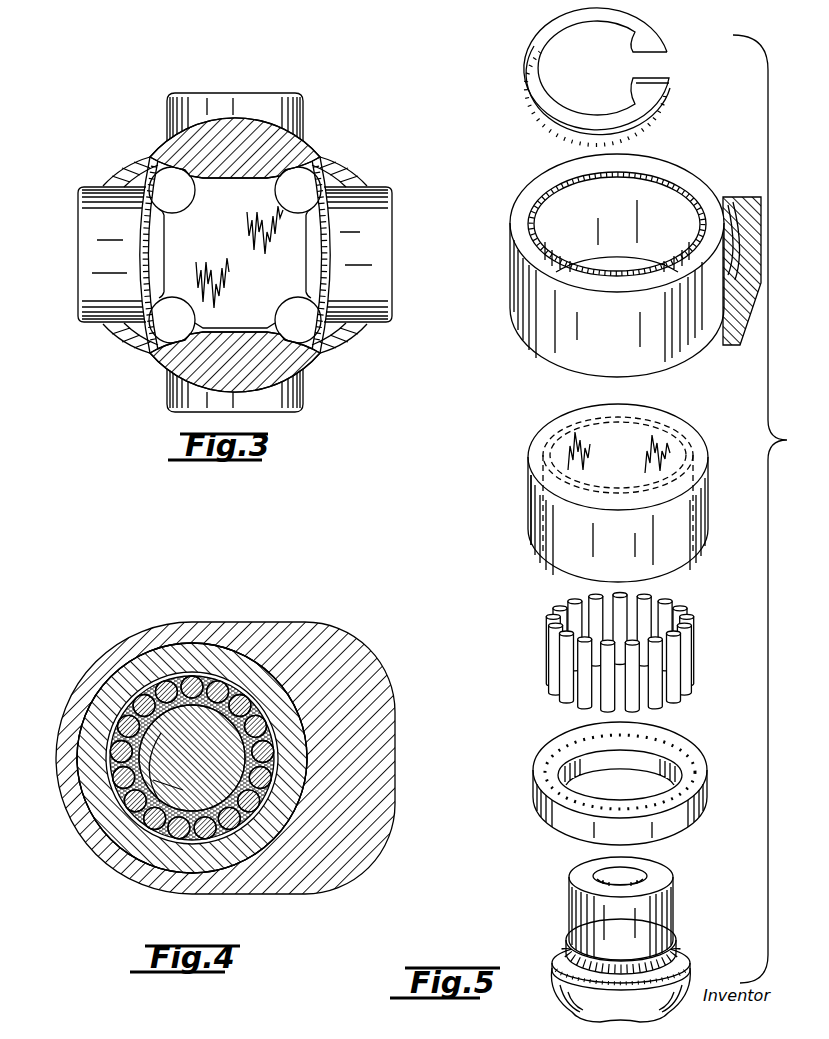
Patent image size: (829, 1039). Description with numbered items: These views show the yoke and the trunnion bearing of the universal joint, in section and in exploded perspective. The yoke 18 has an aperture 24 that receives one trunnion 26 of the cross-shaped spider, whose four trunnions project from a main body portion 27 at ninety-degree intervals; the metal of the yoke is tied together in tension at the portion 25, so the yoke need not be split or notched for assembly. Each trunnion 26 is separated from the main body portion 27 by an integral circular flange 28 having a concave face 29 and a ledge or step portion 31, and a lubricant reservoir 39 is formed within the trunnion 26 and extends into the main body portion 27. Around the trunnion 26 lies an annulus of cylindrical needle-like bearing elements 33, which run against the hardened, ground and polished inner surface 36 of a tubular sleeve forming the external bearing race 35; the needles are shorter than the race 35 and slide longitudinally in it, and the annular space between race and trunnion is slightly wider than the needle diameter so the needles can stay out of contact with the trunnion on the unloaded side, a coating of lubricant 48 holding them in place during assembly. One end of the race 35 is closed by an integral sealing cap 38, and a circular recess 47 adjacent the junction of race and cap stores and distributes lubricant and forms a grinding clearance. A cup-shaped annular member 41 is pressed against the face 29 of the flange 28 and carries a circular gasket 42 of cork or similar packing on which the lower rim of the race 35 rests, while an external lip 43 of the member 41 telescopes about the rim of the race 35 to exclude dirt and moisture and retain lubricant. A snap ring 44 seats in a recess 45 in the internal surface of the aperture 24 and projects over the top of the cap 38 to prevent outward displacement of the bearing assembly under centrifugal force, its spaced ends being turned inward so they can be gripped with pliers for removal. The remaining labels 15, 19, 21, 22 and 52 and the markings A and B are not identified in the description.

In FIG. 3, the cross body 15 is at (233, 228).
In FIG. 5, the cross body 15 is at (682, 993).
In FIG. 3, the yoke 18 is at (285, 167).
In FIG. 4, the yoke 18 is at (293, 635).
In FIG. 5, the yoke 18 is at (525, 203).
In FIG. 3, the bearing cap 19 is at (165, 358).
In FIG. 3, the trunnion 21 is at (380, 235).
In FIG. 3, the trunnion 22 is at (93, 217).
In FIG. 4, the aperture 24 is at (220, 655).
In FIG. 5, the aperture 24 is at (560, 205).
In FIG. 5, the portion of yoke 25 is at (528, 277).
In FIG. 4, the trunnion 26 is at (180, 792).
In FIG. 5, the trunnion 26 is at (673, 900).
In FIG. 3, the main body portion 27 is at (283, 297).
In FIG. 5, the circular flange 28 is at (553, 967).
In FIG. 5, the face 29 is at (687, 960).
In FIG. 5, the ledge or step portion 31 is at (568, 935).
In FIG. 4, the bearing elements 33 is at (132, 687).
In FIG. 5, the bearing elements 33 is at (673, 677).
In FIG. 4, the external bearing race 35 is at (103, 698).
In FIG. 5, the external bearing race 35 is at (528, 495).
In FIG. 4, the inner surface 36 is at (103, 727).
In FIG. 5, the inner surface 36 is at (695, 508).
In FIG. 5, the sealing cap 38 is at (657, 443).
In FIG. 5, the lubricant reservoir 39 is at (593, 870).
In FIG. 5, the annular member 41 is at (705, 790).
In FIG. 5, the circular gasket 42 is at (550, 750).
In FIG. 5, the external lip 43 is at (537, 768).
In FIG. 5, the snap ring 44 is at (527, 68).
In FIG. 5, the recess 45 is at (653, 180).
In FIG. 5, the circular recess 47 is at (547, 442).
In FIG. 4, the lubricant 48 is at (207, 675).
In FIG. 4, the roller cage 52 is at (165, 652).
In FIG. 4, the section direction arrow A is at (194, 905).
In FIG. 4, the axis line B is at (127, 762).